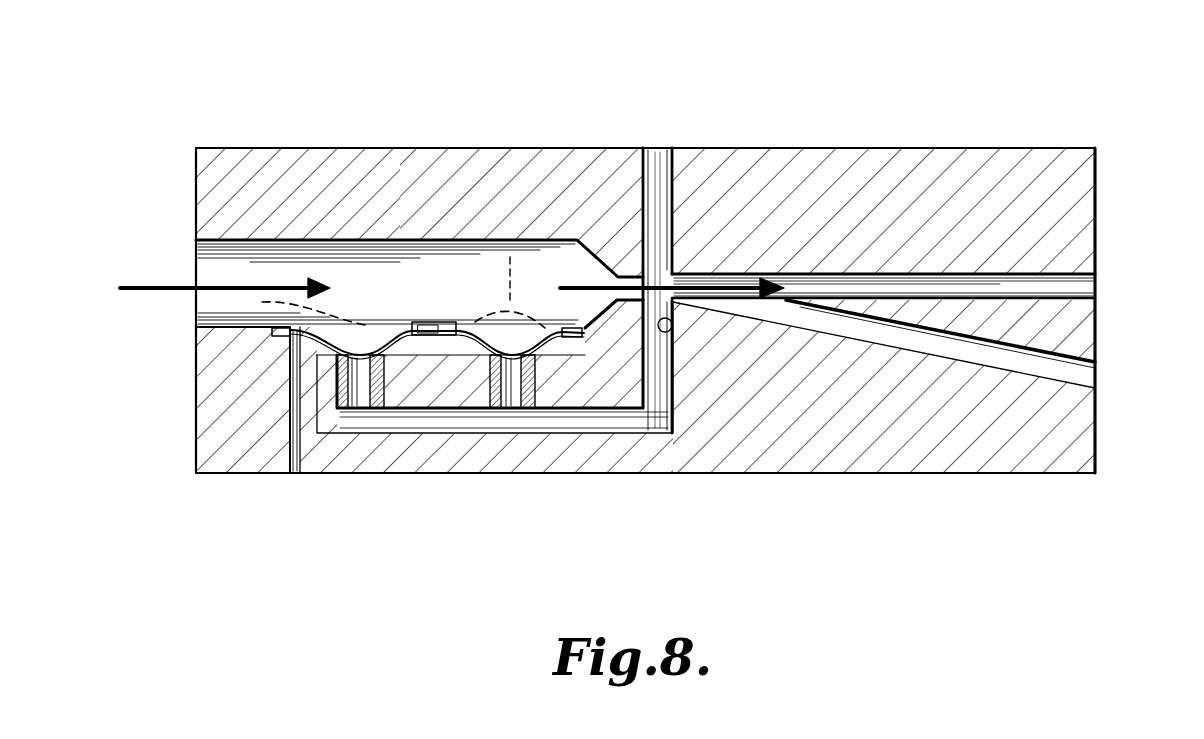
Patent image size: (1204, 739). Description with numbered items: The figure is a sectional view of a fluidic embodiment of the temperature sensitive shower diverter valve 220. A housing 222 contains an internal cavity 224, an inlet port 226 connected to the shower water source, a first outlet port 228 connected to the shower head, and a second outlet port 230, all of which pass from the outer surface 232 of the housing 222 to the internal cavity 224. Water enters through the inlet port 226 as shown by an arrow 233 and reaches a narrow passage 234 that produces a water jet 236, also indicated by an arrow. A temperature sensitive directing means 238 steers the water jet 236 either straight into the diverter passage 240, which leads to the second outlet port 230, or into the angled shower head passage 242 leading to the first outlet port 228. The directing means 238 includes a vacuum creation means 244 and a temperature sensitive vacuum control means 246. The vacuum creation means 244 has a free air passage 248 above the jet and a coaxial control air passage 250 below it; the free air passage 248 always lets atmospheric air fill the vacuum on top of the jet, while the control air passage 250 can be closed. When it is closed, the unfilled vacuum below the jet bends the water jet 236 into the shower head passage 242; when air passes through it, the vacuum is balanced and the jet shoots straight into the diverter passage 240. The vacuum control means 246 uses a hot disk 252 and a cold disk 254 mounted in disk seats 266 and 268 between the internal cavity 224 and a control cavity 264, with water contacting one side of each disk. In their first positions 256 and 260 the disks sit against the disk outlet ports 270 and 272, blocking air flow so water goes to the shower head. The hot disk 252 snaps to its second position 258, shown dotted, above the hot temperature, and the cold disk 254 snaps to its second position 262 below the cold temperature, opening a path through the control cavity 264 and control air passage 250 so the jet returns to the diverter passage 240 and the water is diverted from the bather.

The temperature sensitive shower diverter valve 220 is at (232, 122).
The housing 222 is at (345, 148).
The internal cavity 224 is at (405, 258).
The inlet port 226 is at (198, 256).
The first outlet port 228 is at (1097, 373).
The second outlet port 230 is at (1097, 284).
The outer surface 232 is at (1097, 188).
The arrow 233 is at (162, 286).
The narrow passage 234 is at (607, 277).
The water jet 236 is at (748, 274).
The temperature sensitive directing means 238 is at (740, 108).
The diverter passage 240 is at (968, 274).
The shower head passage 242 is at (1097, 328).
The vacuum creation means 244 is at (630, 108).
The temperature sensitive vacuum control means 246 is at (168, 350).
The free air passage 248 is at (662, 148).
The control air passage 250 is at (706, 400).
The hot disk 252 is at (388, 350).
The cold disk 254 is at (495, 360).
The first position 256 is at (352, 380).
The second position 258 is at (262, 302).
The first position 260 is at (672, 332).
The second position 262 is at (500, 256).
The control cavity 264 is at (440, 345).
The disk seat 266 is at (350, 383).
The disk seat 268 is at (697, 355).
The disk outlet port 270 is at (258, 473).
The disk outlet port 272 is at (573, 342).